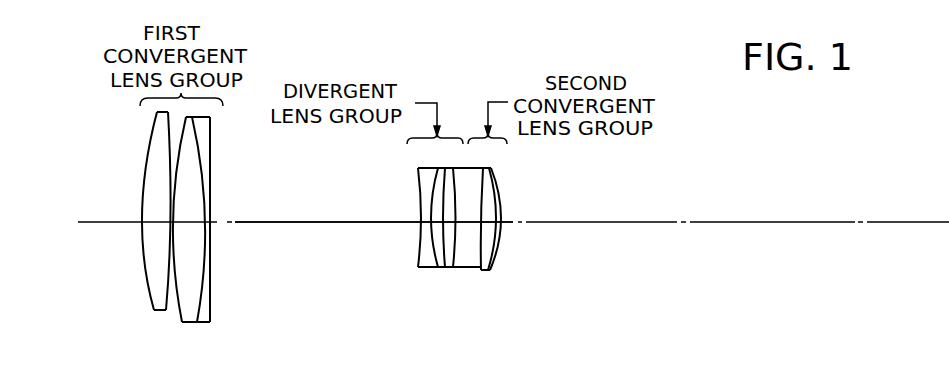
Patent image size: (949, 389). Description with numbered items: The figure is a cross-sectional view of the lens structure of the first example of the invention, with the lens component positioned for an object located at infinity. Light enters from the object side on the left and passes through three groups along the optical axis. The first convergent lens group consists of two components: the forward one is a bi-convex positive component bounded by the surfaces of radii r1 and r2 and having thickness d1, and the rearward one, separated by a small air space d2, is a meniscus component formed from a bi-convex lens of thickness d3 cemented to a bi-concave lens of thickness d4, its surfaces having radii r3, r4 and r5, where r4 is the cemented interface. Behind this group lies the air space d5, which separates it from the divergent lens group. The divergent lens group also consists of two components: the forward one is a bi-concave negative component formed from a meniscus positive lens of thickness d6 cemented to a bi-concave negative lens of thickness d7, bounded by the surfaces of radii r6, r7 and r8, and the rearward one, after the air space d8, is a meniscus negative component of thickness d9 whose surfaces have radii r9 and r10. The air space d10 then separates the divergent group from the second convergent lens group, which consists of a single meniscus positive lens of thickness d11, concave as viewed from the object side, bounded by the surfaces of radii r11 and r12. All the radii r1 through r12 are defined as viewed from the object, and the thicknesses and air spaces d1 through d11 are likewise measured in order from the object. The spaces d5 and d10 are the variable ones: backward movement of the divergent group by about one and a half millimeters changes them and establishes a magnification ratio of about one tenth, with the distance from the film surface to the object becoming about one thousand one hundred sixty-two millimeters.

The radius of curvature of first lens surface r1 is at (155, 311).
The radius of curvature of second lens surface r2 is at (167, 312).
The radius of curvature of third lens surface r3 is at (183, 323).
The radius of curvature of fourth lens surface r4 is at (197, 323).
The radius of curvature of fifth lens surface r5 is at (211, 323).
The radius of curvature of sixth lens surface r6 is at (418, 268).
The radius of curvature of seventh lens surface r7 is at (436, 268).
The radius of curvature of eighth lens surface r8 is at (445, 268).
The radius of curvature of ninth lens surface r9 is at (453, 268).
The radius of curvature of tenth lens surface r10 is at (481, 271).
The radius of curvature of eleventh lens surface r11 is at (489, 271).
The radius of curvature of twelfth lens surface r12 is at (496, 271).
The lens thickness d1 is at (168, 219).
The air space d2 is at (171, 216).
The lens thickness d3 is at (202, 218).
The lens thickness d4 is at (204, 216).
The air space d5 is at (320, 221).
The lens thickness d6 is at (422, 213).
The lens thickness d7 is at (432, 226).
The air space d8 is at (450, 210).
The lens thickness d9 is at (452, 232).
The air space d10 is at (486, 222).
The lens thickness d11 is at (494, 212).